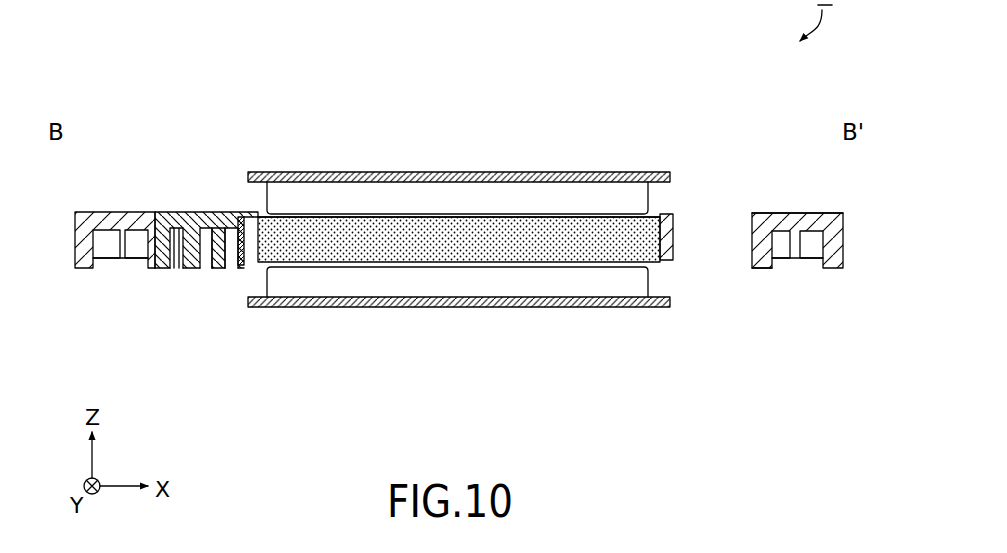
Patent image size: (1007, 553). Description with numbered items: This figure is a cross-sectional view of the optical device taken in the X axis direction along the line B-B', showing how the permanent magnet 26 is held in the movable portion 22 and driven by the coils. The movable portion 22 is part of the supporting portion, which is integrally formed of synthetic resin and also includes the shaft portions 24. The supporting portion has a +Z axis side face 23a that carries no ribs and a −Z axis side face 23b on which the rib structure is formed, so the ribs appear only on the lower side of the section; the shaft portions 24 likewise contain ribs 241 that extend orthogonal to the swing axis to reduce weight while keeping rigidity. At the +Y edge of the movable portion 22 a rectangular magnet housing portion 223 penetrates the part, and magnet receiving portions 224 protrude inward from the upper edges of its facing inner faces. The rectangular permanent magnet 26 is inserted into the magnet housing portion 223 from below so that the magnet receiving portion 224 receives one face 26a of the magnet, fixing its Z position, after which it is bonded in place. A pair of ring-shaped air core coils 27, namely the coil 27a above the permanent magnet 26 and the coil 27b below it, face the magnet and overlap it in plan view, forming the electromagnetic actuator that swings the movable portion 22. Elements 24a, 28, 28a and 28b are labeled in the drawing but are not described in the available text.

The +Z axis side face 23a is at (782, 213).
The −Z axis side face 23b is at (772, 262).
The shaft portion 24 is at (200, 265).
The holding block 24a is at (200, 265).
The magnet receiving portion 224 is at (254, 239).
The rib 241 is at (192, 268).
The movable portion 22 is at (242, 300).
The magnet housing portion 223 is at (215, 268).
The permanent magnet 26 is at (459, 187).
The face of the permanent magnet 26a is at (336, 224).
The coil 27 is at (457, 242).
The coil 27a is at (515, 197).
The coil 27b is at (515, 285).
The plate 28 is at (459, 241).
The upper plate 28a is at (463, 172).
The lower plate 28b is at (460, 308).